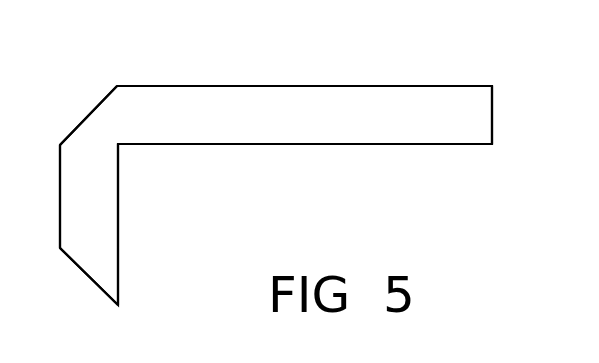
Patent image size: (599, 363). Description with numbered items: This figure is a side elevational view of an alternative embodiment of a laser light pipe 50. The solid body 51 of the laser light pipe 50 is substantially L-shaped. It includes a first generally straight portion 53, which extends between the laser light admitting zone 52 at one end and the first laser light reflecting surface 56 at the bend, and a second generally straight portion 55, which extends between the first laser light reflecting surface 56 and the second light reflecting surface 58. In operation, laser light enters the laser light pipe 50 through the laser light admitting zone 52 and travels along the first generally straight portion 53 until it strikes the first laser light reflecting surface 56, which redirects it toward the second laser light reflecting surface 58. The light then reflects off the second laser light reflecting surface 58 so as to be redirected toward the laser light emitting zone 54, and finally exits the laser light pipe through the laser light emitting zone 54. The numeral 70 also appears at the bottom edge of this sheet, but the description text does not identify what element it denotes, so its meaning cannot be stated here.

The laser light pipe 50 is at (253, 72).
The solid body 51 is at (119, 100).
The laser light admitting zone 52 is at (492, 127).
The first generally straight portion 53 is at (384, 86).
The laser light emitting zone 54 is at (119, 269).
The second generally straight portion 55 is at (60, 197).
The first laser light reflecting surface 56 is at (73, 128).
The second laser light reflecting surface 58 is at (91, 280).
The element of following figure 70 is at (318, 353).